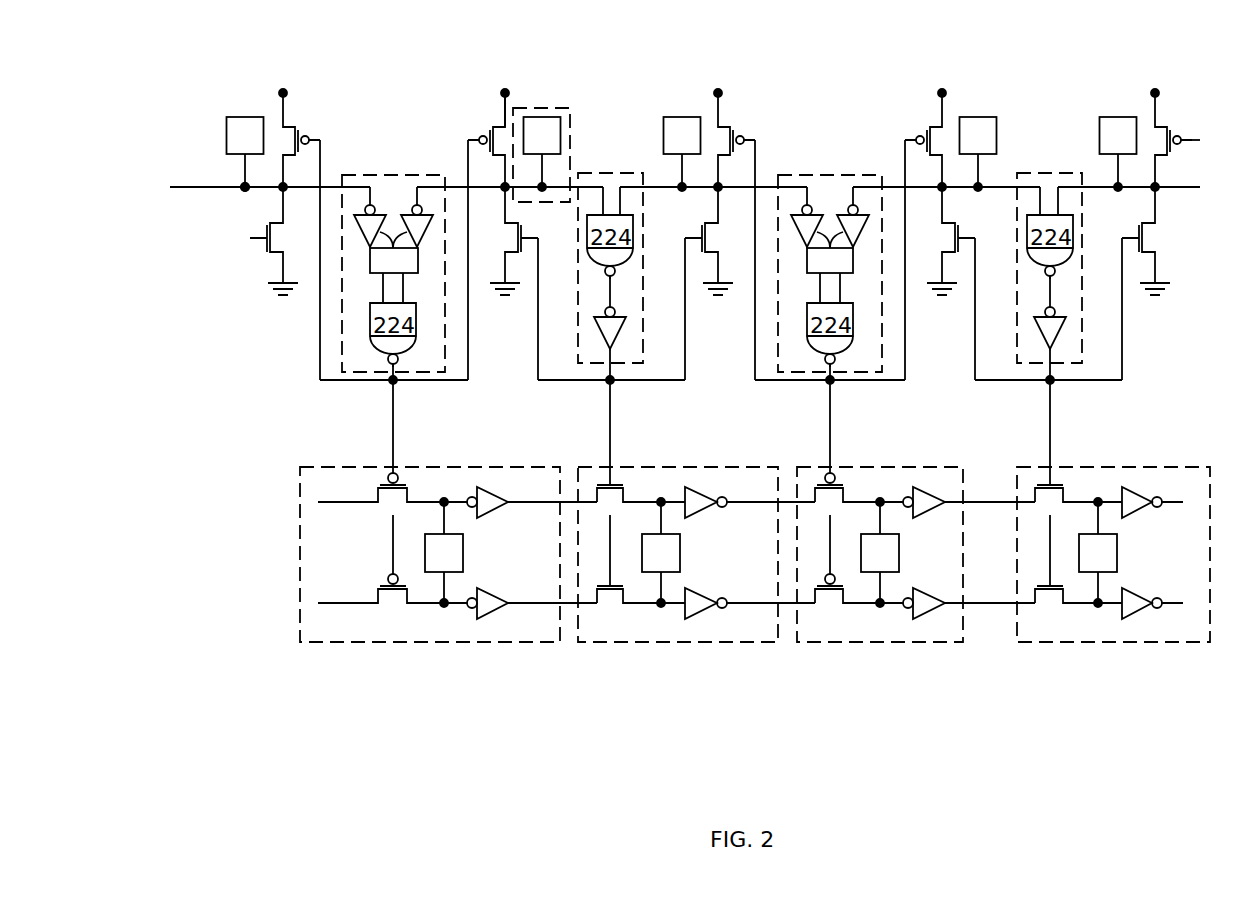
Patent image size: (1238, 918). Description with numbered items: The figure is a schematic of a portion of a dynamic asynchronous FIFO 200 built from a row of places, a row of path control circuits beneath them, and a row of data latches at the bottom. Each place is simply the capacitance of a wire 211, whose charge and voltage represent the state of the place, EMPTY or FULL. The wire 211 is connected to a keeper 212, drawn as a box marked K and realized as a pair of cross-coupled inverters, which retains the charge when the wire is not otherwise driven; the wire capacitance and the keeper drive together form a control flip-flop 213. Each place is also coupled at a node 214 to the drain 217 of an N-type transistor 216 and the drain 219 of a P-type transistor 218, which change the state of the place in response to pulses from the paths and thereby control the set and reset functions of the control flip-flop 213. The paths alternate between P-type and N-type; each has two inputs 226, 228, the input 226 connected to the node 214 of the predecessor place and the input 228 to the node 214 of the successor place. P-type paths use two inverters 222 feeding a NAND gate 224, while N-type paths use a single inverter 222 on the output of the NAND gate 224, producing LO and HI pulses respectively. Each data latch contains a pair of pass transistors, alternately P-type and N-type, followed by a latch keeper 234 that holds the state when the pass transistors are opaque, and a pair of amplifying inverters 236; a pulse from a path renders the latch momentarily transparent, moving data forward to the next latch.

The FIFO 200 is at (275, 705).
The wire 211 is at (245, 168).
The keeper 212 is at (530, 108).
The control flip-flop 213 is at (518, 107).
The node 214 is at (979, 191).
The N-type transistor 216 is at (280, 254).
The drain 217 is at (283, 203).
The P-type transistor 218 is at (492, 123).
The drain 219 is at (503, 150).
The inverter 222 is at (626, 332).
The NAND gate 224 is at (721, 291).
The input 226 is at (370, 205).
The input 228 is at (417, 206).
The latch keeper 234 is at (463, 555).
The amplifying inverter 236 is at (499, 492).